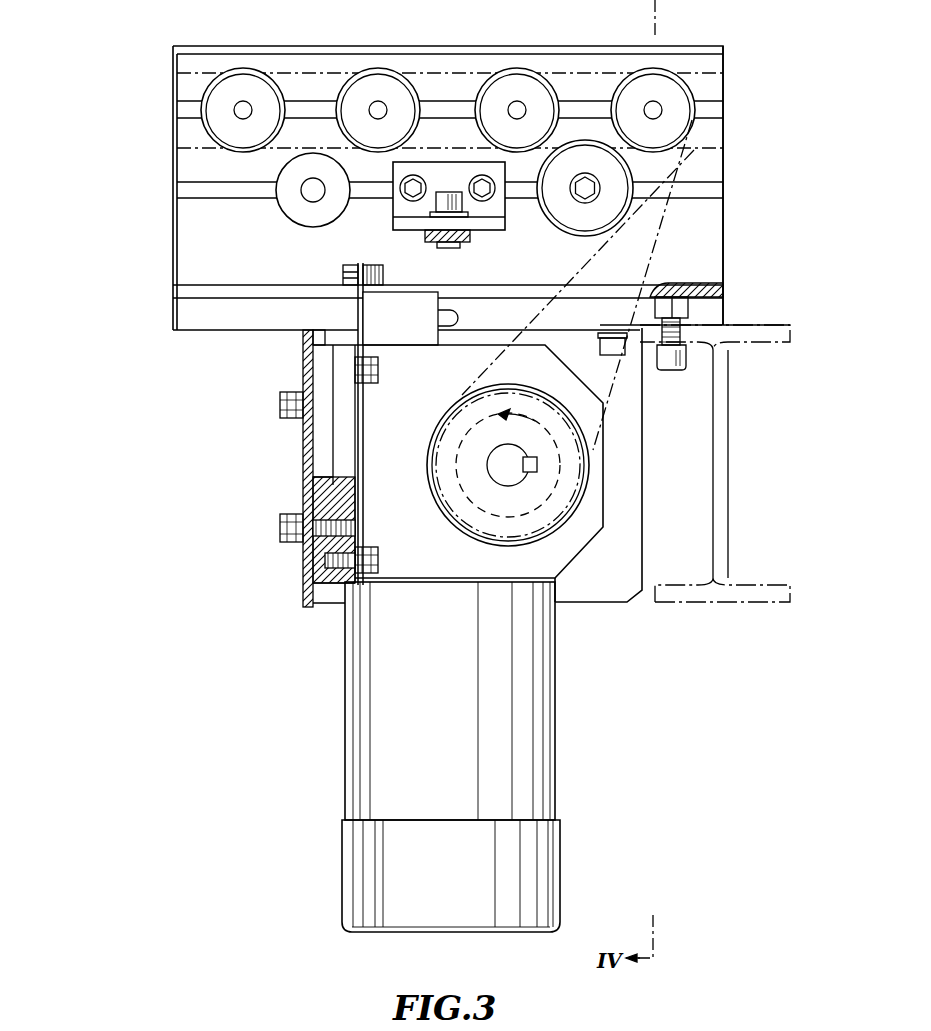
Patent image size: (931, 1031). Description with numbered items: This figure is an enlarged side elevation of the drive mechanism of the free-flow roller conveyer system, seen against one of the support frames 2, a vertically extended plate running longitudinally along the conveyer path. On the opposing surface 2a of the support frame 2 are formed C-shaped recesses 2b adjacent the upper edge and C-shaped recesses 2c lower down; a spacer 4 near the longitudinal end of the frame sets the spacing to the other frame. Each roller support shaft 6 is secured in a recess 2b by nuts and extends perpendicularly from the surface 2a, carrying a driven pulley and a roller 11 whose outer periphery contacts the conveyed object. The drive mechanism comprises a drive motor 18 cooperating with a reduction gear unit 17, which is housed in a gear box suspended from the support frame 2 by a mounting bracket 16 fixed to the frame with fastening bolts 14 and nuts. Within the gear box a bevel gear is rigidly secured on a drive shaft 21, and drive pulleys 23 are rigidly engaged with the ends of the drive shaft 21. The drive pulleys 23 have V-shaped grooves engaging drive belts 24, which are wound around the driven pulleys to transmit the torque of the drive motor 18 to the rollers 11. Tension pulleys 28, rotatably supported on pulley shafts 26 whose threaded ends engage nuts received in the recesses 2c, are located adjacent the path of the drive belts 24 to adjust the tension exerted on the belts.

The support frame 2 is at (728, 73).
The opposing surface 2a is at (712, 158).
The C-shaped recess 2b is at (180, 108).
The C-shaped recess 2c is at (180, 190).
The spacer 4 is at (436, 243).
The roller support shaft 6 is at (381, 103).
The roller 11 is at (240, 88).
The fastening bolt 14 is at (615, 357).
The mounting bracket 16 is at (643, 512).
The reduction gear unit 17 is at (410, 575).
The drive motor 18 is at (543, 720).
The drive shaft 21 is at (500, 470).
The drive pulley 23 is at (540, 520).
The drive belt 24 is at (714, 284).
The pulley shaft 26 is at (300, 192).
The tension pulley 28 is at (300, 213).